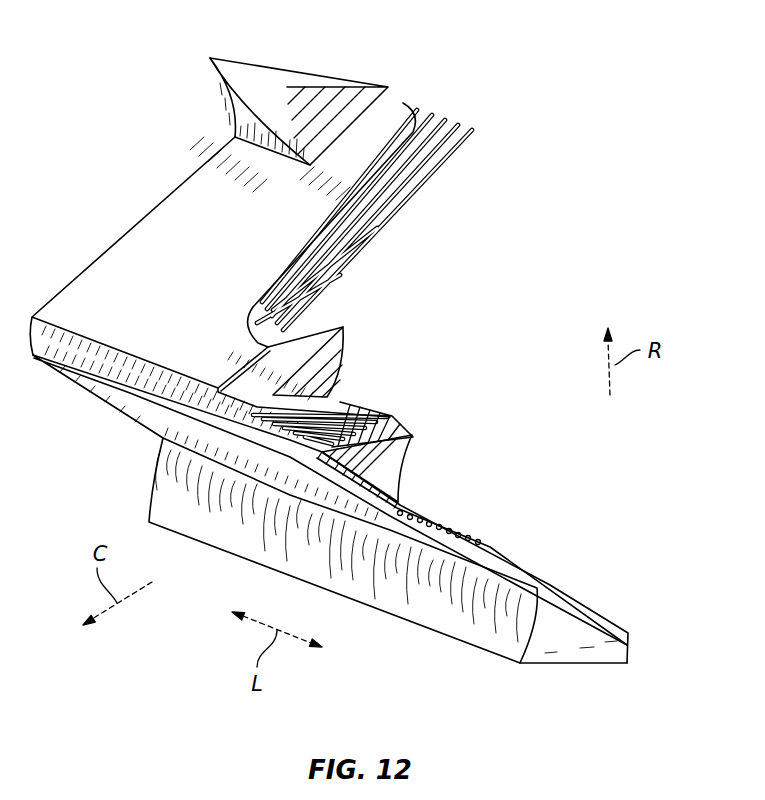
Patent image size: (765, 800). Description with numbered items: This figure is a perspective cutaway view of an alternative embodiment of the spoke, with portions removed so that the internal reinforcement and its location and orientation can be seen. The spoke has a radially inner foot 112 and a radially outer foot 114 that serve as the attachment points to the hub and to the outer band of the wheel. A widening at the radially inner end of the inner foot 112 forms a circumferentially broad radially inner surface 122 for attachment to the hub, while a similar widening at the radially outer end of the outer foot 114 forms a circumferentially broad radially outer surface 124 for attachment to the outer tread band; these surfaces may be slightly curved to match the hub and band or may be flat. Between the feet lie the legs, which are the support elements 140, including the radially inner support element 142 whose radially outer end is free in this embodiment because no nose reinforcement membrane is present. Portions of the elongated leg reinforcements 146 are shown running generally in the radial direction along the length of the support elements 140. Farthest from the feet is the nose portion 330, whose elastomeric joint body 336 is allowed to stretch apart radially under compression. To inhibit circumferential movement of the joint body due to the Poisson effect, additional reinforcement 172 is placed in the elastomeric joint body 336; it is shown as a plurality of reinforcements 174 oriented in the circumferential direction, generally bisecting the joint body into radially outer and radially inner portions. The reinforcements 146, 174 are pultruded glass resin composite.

The radially inner foot 112 is at (455, 613).
The radially outer foot 114 is at (247, 103).
The radially inner surface 122 is at (565, 663).
The radially outer surface 124 is at (283, 72).
The support element 140 is at (165, 230).
The radially inner support element 142 is at (493, 547).
The elongated leg reinforcements 146 is at (400, 193).
The reinforcement 172 is at (347, 405).
The reinforcements 174 is at (385, 430).
The nose portion 330 is at (97, 368).
The elastomeric joint body 336 is at (323, 370).